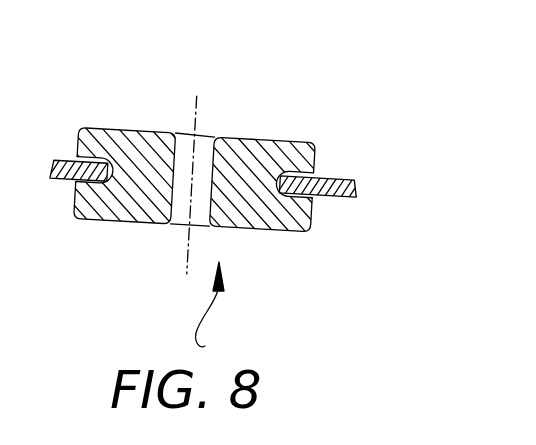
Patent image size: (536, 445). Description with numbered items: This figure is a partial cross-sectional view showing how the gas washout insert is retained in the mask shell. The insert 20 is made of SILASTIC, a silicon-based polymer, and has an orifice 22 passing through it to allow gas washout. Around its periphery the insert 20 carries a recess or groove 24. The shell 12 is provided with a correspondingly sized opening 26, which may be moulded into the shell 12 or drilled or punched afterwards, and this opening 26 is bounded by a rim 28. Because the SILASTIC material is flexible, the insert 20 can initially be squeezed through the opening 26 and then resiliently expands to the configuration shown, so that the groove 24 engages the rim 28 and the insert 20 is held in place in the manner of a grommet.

The shell 12 is at (330, 178).
The insert 20 is at (105, 128).
The orifice 22 is at (178, 214).
The recess or groove 24 is at (117, 167).
The opening 26 is at (217, 311).
The rim 28 is at (285, 182).